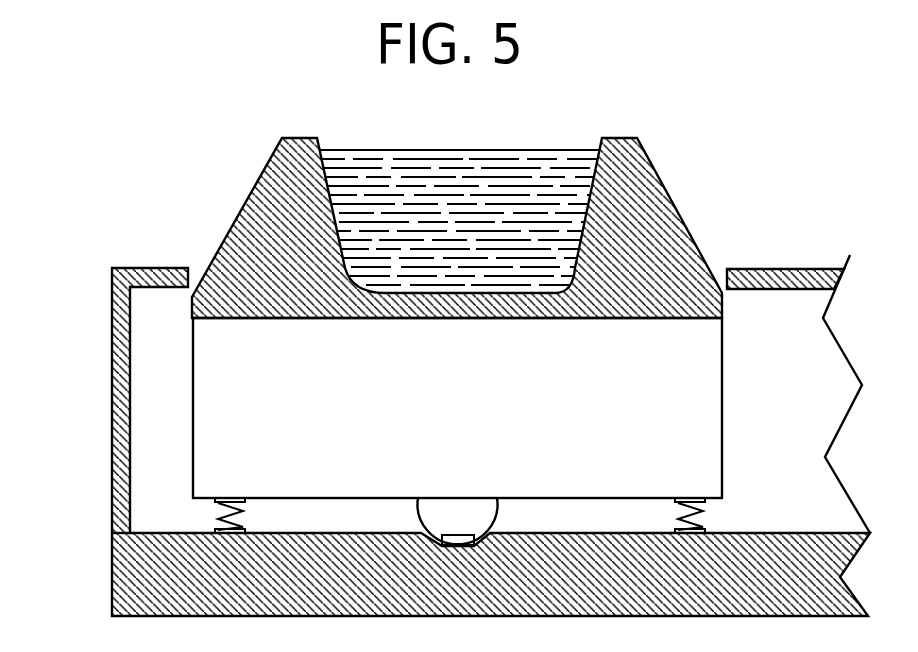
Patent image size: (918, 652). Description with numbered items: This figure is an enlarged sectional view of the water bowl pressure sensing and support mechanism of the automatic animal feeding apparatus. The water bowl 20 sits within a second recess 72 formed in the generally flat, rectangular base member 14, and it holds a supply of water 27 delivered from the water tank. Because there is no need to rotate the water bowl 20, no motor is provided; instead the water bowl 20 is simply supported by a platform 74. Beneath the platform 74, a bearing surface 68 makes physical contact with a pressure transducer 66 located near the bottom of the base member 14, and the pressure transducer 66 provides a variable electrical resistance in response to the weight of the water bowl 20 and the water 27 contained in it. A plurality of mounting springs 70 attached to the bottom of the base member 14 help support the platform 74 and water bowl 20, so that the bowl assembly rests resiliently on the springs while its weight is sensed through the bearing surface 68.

The base member 14 is at (118, 378).
The water bowl 20 is at (262, 182).
The water 27 is at (548, 178).
The pressure transducer 66 is at (447, 538).
The bearing surface 68 is at (473, 506).
The mounting springs 70 is at (212, 520).
The second recess 72 is at (718, 266).
The platform 74 is at (703, 418).